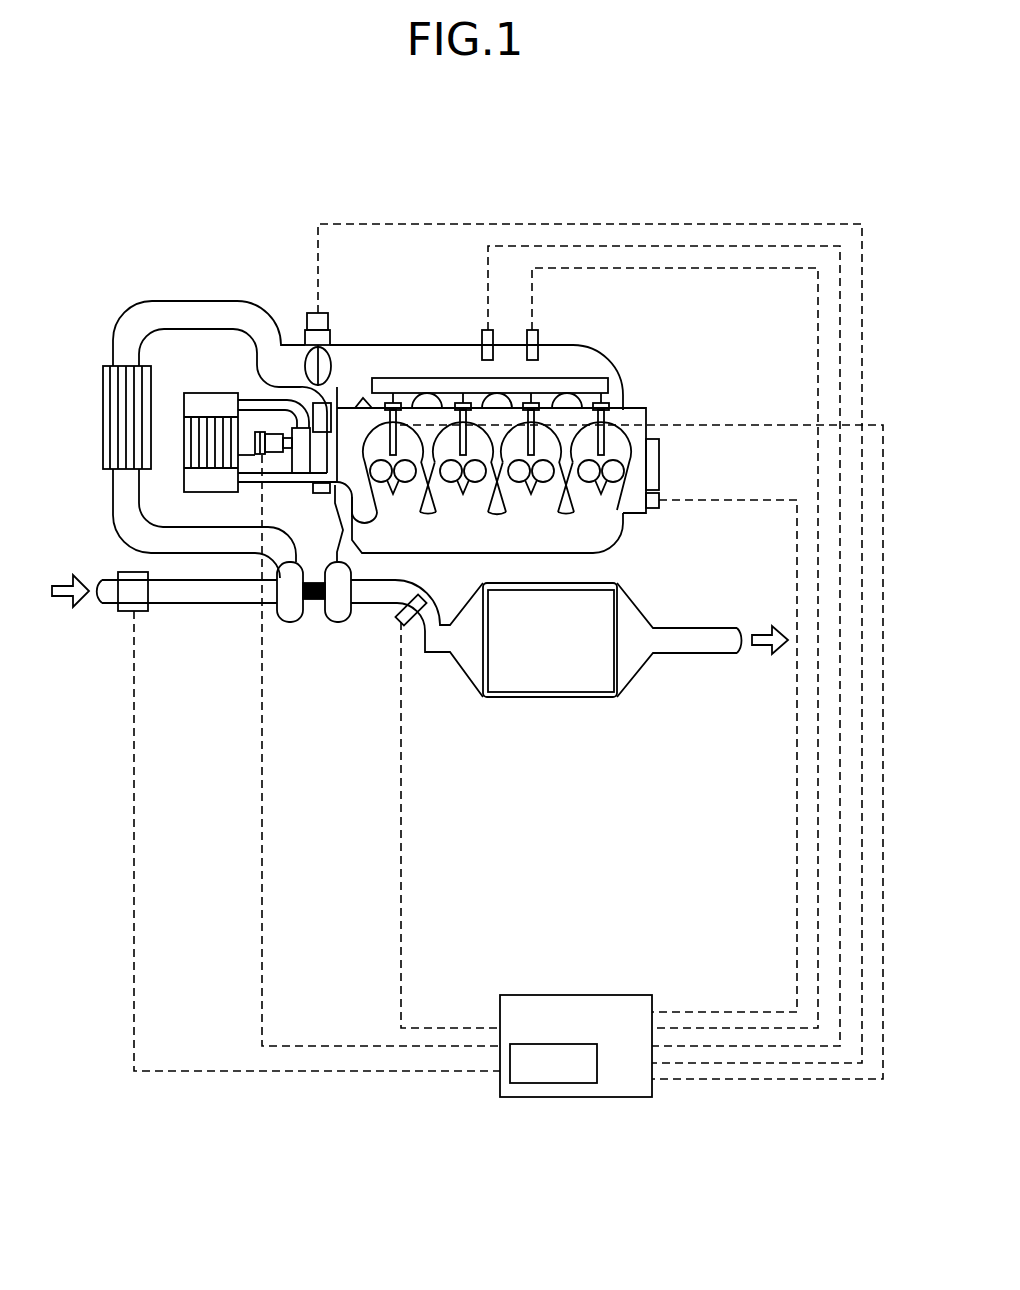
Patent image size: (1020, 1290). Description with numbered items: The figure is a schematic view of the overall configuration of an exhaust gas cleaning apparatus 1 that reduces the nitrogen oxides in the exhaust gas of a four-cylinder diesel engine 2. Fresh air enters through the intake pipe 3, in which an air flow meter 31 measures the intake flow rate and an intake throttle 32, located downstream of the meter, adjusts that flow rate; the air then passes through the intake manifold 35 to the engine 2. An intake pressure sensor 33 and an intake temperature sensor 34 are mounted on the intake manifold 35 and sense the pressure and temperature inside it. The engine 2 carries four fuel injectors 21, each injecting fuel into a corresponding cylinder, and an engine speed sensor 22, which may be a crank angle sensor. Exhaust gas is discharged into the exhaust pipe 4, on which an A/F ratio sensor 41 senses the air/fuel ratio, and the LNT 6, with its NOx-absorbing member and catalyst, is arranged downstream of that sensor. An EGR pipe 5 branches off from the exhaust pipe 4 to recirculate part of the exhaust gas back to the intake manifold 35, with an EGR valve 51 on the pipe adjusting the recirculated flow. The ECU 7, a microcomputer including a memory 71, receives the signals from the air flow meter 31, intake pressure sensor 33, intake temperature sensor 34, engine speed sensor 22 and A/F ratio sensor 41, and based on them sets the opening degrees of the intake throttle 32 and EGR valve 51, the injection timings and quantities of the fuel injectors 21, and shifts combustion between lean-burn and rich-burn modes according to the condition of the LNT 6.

The exhaust gas cleaning apparatus 1 is at (604, 190).
The diesel engine 2 is at (648, 420).
The fuel injector 21 is at (610, 432).
The engine speed sensor 22 is at (661, 500).
The intake pipe 3 is at (204, 605).
The air flow meter 31 is at (125, 611).
The intake throttle 32 is at (333, 362).
The intake pressure sensor 33 is at (481, 333).
The intake temperature sensor 34 is at (537, 333).
The intake manifold 35 is at (608, 358).
The exhaust pipe 4 is at (362, 606).
The A/F ratio sensor 41 is at (399, 622).
The EGR pipe 5 is at (277, 487).
The EGR valve 51 is at (268, 432).
The Lean NOx Trap (LNT) 6 is at (598, 583).
The Electronic Control Unit (ECU) 7 is at (576, 995).
The memory 71 is at (553, 1084).